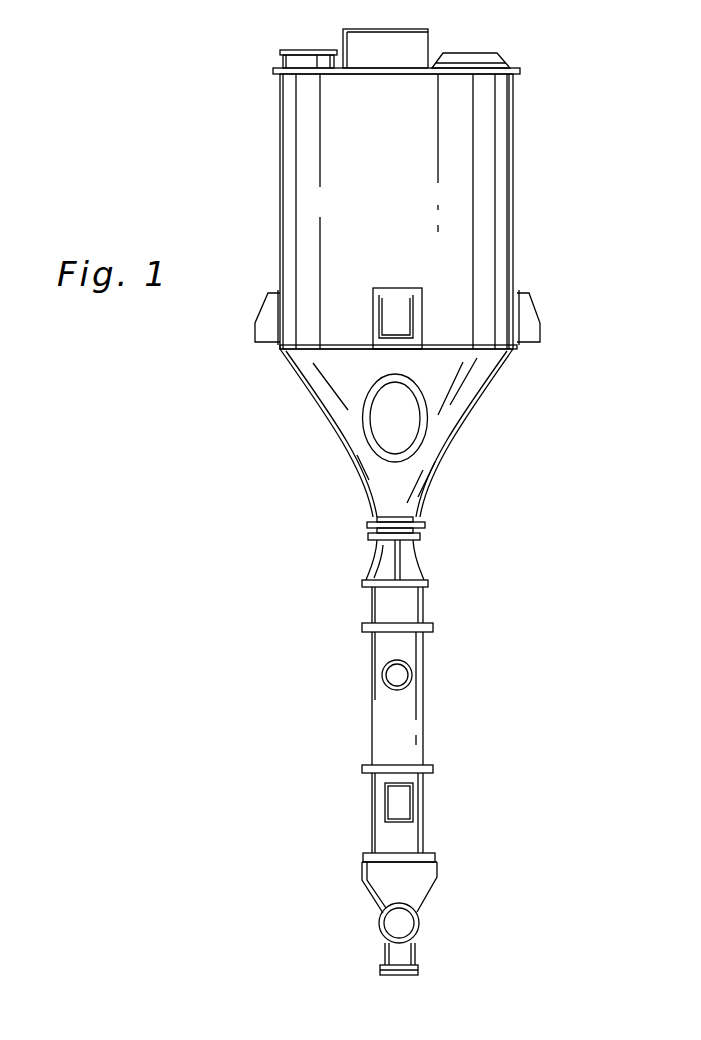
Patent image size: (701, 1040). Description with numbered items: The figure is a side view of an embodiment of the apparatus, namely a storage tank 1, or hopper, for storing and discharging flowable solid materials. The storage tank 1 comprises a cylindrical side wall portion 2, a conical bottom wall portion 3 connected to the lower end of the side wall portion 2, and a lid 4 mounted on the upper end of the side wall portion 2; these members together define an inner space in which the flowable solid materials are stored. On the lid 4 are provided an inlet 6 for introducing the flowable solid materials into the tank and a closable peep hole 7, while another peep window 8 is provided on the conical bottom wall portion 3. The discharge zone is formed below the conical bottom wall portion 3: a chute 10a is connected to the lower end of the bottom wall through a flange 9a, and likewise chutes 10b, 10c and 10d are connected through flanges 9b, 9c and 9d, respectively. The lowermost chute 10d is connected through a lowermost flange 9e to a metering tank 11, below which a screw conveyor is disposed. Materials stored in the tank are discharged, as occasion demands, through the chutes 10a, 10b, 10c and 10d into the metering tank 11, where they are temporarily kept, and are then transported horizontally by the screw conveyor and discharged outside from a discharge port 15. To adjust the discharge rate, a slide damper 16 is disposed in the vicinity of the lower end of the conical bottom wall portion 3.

The storage tank 1 is at (516, 217).
The cylindrical side wall portion 2 is at (283, 197).
The conical bottom wall portion 3 is at (315, 397).
The lid 4 is at (273, 68).
The inlet 6 is at (297, 50).
The closable peep hole 7 is at (465, 55).
The peep window 8 is at (367, 428).
The flange 9a is at (420, 538).
The flange 9b is at (428, 582).
The flange 9c is at (433, 625).
The flange 9d is at (435, 770).
The lowermost flange 9e is at (433, 853).
The chute 10a is at (377, 557).
The chute 10b is at (375, 608).
The chute 10c is at (377, 710).
The chute 10d is at (377, 803).
The metering tank 11 is at (430, 882).
The discharge port 15 is at (418, 970).
The slide damper 16 is at (413, 517).